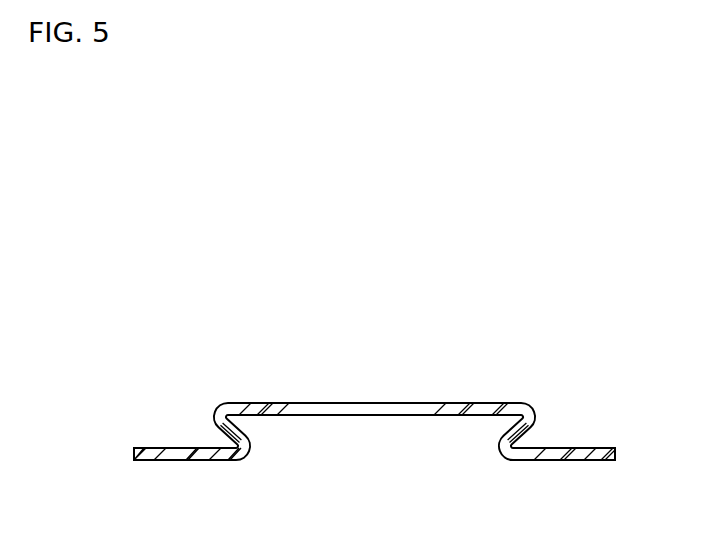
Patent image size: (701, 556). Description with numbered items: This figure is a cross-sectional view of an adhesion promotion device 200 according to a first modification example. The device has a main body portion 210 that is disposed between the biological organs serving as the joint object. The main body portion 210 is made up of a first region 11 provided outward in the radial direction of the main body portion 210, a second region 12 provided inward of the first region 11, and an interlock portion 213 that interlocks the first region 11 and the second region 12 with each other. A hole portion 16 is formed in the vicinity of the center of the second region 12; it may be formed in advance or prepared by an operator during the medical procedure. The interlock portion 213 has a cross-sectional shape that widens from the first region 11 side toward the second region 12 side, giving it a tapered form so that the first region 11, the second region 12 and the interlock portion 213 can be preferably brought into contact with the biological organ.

The adhesion promotion device 200 is at (100, 241).
The main body portion 210 is at (211, 411).
The hole portion 16 is at (318, 402).
The second region 12 is at (481, 402).
The interlock portion 213 is at (535, 420).
The first region 11 is at (601, 462).